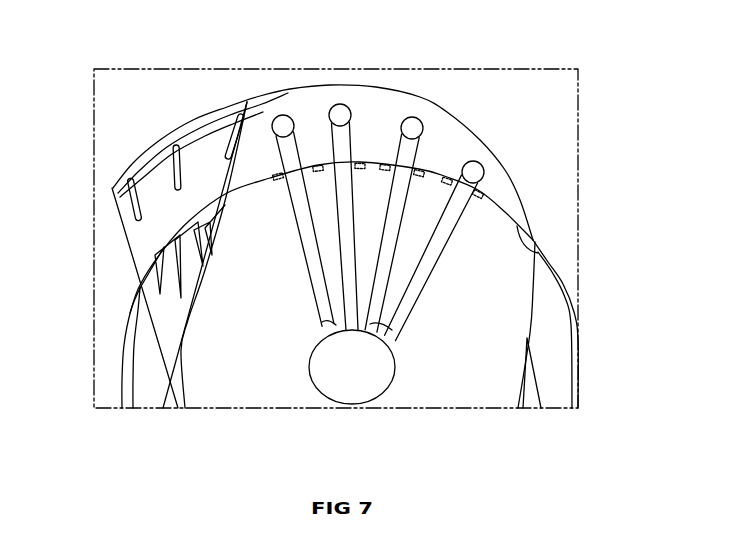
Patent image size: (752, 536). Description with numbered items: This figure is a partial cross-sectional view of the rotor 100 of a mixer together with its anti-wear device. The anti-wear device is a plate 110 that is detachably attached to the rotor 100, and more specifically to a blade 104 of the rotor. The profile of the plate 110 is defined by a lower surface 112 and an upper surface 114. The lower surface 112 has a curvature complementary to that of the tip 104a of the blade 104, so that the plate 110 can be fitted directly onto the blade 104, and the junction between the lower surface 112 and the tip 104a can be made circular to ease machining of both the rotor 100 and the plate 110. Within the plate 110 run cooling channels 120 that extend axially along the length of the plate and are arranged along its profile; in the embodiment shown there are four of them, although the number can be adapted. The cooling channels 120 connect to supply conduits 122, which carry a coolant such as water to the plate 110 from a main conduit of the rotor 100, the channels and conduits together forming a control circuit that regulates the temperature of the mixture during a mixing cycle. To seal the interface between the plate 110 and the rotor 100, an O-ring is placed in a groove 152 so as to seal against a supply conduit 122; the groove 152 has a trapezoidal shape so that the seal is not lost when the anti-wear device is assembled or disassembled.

The rotor 100 is at (133, 113).
The blade 104 is at (175, 345).
The tip 104a is at (205, 218).
The plate 110 is at (502, 182).
The lower surface 112 is at (535, 250).
The upper surface 114 is at (473, 135).
The cooling channels 120 is at (470, 165).
The supply conduits 122 is at (397, 330).
The groove 152 is at (277, 168).